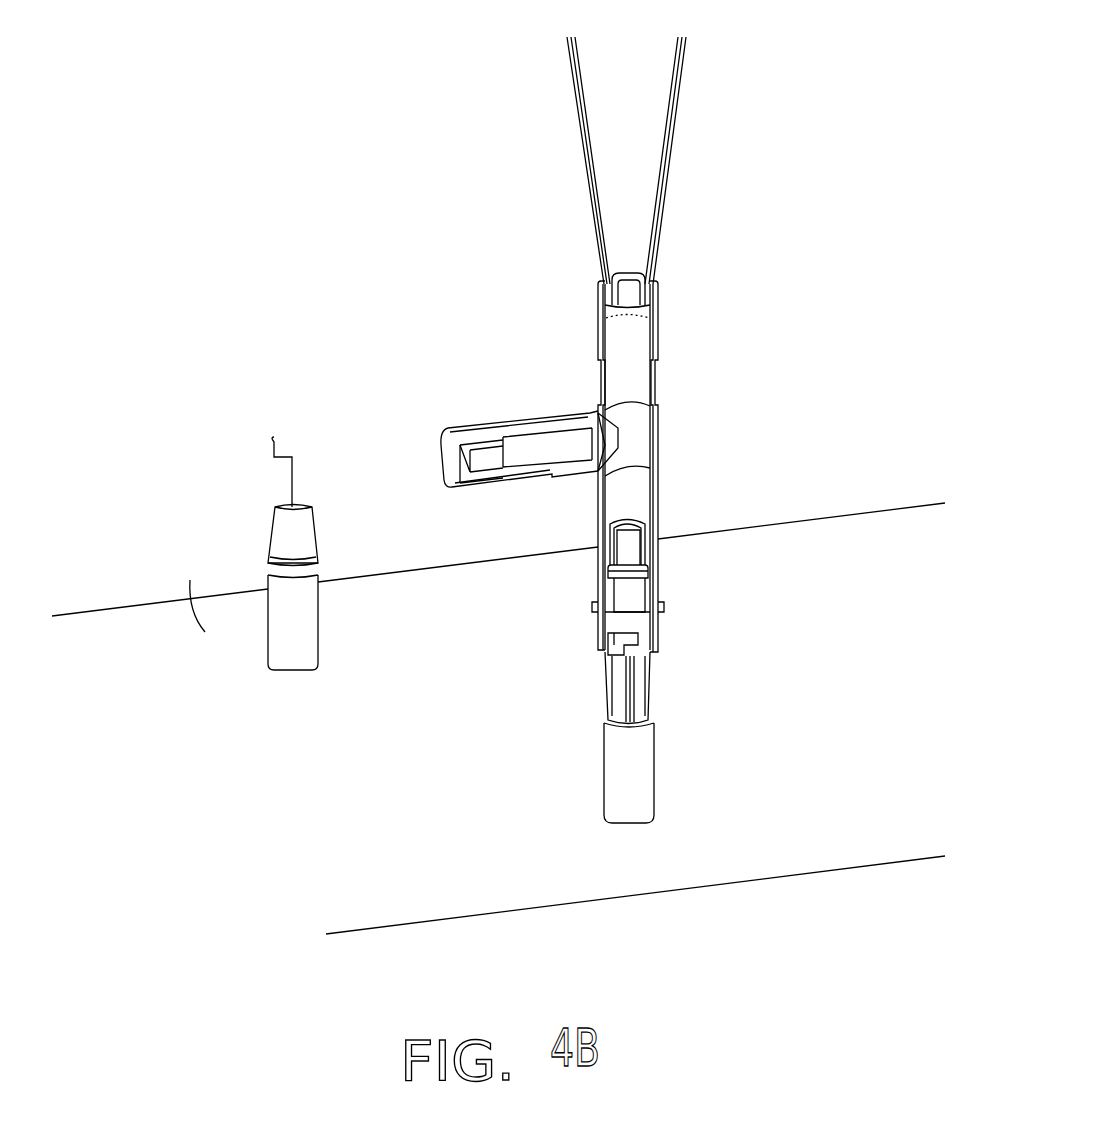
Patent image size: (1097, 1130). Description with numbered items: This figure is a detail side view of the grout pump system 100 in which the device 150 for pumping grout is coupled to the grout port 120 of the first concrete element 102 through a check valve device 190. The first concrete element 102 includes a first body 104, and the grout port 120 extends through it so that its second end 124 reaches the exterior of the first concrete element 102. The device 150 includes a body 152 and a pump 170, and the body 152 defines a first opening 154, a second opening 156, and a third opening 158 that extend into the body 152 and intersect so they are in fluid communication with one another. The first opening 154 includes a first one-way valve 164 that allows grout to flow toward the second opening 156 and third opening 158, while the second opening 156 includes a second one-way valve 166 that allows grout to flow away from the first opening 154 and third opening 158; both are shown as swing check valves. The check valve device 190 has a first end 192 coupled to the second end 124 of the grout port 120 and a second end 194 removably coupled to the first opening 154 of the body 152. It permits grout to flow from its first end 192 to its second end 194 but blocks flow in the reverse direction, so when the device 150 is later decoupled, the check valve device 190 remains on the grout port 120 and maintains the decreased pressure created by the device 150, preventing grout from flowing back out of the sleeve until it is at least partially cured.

The system 100 is at (107, 152).
The first concrete element 102 is at (110, 606).
The first body 104 is at (194, 588).
The grout port 120 is at (665, 792).
The second end of grout port 124 is at (657, 740).
The device for pumping grout 150 is at (490, 316).
The body 152 is at (664, 437).
The first opening 154 is at (632, 494).
The second opening 156 is at (541, 446).
The third opening 158 is at (640, 330).
The first one-way valve 164 is at (652, 545).
The second one-way valve 166 is at (479, 440).
The pump 170 is at (682, 122).
The check valve device 190 is at (664, 663).
The first end of check valve device 192 is at (604, 712).
The second end of check valve device 194 is at (598, 627).